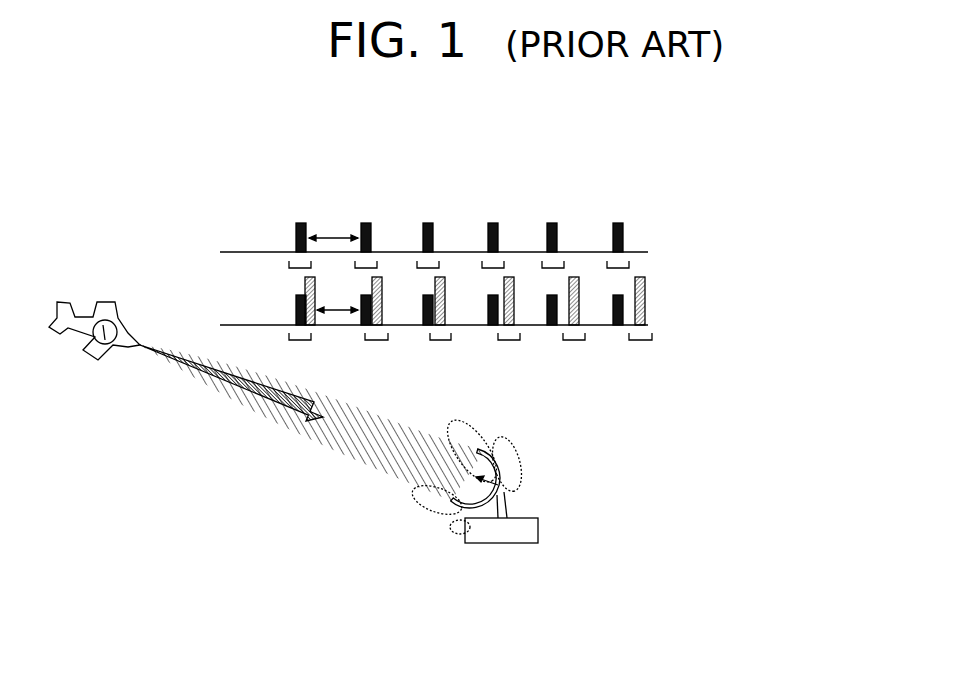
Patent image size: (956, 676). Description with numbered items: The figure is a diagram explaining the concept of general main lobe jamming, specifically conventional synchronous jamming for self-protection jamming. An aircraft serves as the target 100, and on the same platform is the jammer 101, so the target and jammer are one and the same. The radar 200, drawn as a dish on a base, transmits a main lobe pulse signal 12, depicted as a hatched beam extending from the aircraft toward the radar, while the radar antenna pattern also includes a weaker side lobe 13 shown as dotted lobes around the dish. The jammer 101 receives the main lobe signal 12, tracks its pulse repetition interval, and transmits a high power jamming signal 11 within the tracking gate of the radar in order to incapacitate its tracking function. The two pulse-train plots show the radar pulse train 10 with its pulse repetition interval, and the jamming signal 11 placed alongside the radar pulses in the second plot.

The radar pulse train 10 is at (300, 222).
The high power jamming signal 11 is at (300, 295).
The main lobe signal 12 is at (280, 420).
The side lobe 13 is at (427, 497).
The target 100 is at (82, 320).
The jammer 101 is at (107, 320).
The radar 200 is at (502, 545).